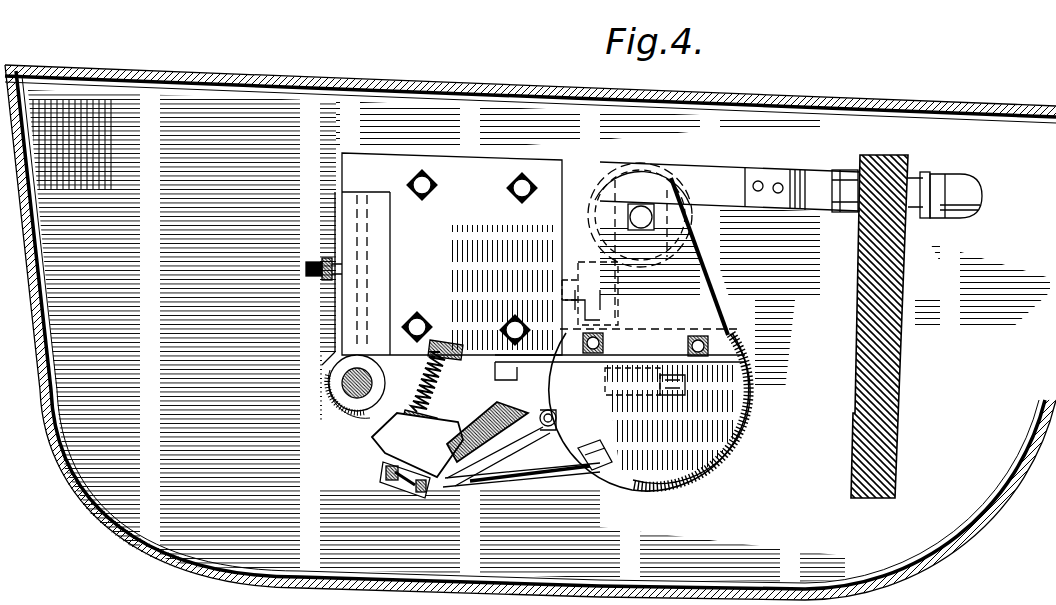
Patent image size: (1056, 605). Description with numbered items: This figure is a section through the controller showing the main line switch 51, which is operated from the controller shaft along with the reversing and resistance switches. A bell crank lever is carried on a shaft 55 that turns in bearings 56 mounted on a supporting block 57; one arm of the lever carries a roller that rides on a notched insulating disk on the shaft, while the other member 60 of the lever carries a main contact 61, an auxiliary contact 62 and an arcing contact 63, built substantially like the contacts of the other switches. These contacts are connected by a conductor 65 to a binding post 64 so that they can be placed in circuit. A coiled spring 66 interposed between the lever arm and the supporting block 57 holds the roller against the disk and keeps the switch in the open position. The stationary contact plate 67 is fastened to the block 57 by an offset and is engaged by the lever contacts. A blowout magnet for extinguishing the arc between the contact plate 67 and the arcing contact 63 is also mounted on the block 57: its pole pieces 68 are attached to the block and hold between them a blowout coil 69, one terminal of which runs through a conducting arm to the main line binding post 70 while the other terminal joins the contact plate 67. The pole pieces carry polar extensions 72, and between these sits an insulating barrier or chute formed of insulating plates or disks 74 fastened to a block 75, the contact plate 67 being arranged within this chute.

The main line switch 51 is at (530, 332).
The shaft 55 is at (352, 397).
The bearings 56 is at (345, 376).
The supporting block 57 is at (355, 178).
The member of the bell crank lever 60 is at (376, 435).
The main contact 61 is at (487, 423).
The auxiliary contact 62 is at (557, 421).
The arcing contact 63 is at (600, 468).
The binding post 64 is at (318, 277).
The conductor 65 is at (325, 400).
The coiled spring 66 is at (395, 352).
The contact plate 67 is at (548, 335).
The pole pieces 68 is at (562, 292).
The blowout coil 69 is at (687, 200).
The main line binding post 70 is at (708, 342).
The polar extensions 72 is at (710, 437).
The insulating plates or disks 74 is at (683, 478).
The block 75 is at (660, 347).